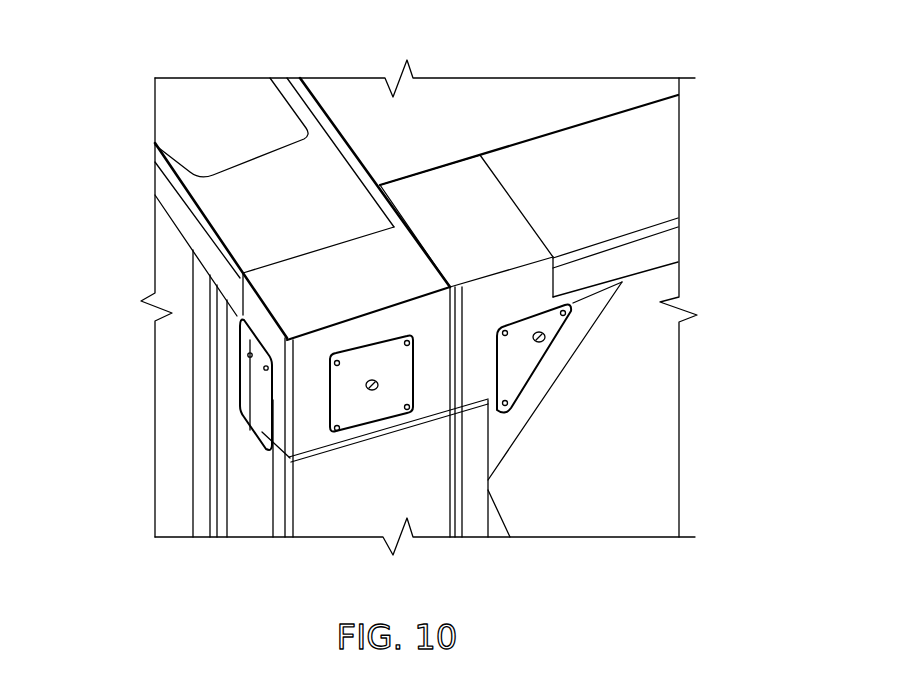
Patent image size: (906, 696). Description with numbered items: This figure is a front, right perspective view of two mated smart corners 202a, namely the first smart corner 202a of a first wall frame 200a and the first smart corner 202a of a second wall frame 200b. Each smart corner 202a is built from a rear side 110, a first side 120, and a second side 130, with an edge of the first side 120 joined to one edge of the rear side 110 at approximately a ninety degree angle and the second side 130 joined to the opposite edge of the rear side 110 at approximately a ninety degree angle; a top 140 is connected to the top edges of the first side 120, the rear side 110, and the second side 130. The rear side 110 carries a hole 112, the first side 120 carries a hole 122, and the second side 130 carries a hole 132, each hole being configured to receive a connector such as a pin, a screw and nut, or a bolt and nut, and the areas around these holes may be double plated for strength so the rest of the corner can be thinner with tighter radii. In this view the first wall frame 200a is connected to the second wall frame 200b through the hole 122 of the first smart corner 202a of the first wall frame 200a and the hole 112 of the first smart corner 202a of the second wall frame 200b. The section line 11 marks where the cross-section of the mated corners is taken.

The cross-section line 11 is at (272, 312).
The rear side 110 is at (305, 440).
The hole 112 is at (373, 392).
The first side 120 is at (510, 434).
The hole 122 is at (547, 337).
The second side 130 is at (170, 313).
The hole 132 is at (247, 352).
The top 140 is at (283, 275).
The first wall frame 200a is at (352, 97).
The second wall frame 200b is at (591, 106).
The first smart corner 202a is at (292, 237).